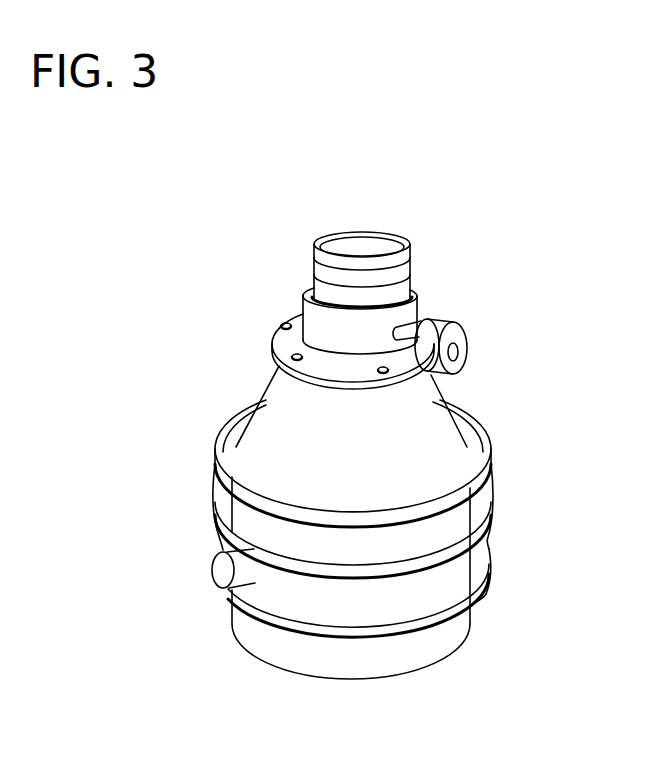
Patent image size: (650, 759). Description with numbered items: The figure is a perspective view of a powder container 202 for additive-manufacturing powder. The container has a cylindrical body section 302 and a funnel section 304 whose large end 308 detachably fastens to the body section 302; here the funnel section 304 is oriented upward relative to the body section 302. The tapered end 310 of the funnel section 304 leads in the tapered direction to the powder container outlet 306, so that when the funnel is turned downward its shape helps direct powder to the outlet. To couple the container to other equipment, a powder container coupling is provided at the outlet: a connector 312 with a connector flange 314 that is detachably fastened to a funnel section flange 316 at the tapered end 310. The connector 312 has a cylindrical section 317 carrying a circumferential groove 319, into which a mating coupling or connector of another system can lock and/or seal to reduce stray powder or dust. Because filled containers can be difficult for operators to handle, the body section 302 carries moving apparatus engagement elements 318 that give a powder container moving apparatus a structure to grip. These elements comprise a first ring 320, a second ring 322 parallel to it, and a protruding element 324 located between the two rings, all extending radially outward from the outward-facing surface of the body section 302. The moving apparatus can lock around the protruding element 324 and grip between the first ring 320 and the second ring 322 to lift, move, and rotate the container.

The powder container 202 is at (458, 97).
The body section 302 is at (447, 567).
The funnel section 304 is at (430, 425).
The powder container outlet 306 is at (358, 242).
The large end 308 is at (494, 467).
The tapered end 310 is at (433, 380).
The connector 312 is at (400, 290).
The connector flange 314 is at (280, 350).
The funnel section flange 316 is at (280, 362).
The cylindrical section 317 is at (318, 280).
The moving apparatus engagement elements 318 is at (178, 528).
The circumferential groove 319 is at (322, 276).
The first ring 320 is at (220, 492).
The second ring 322 is at (277, 617).
The protruding element 324 is at (222, 565).